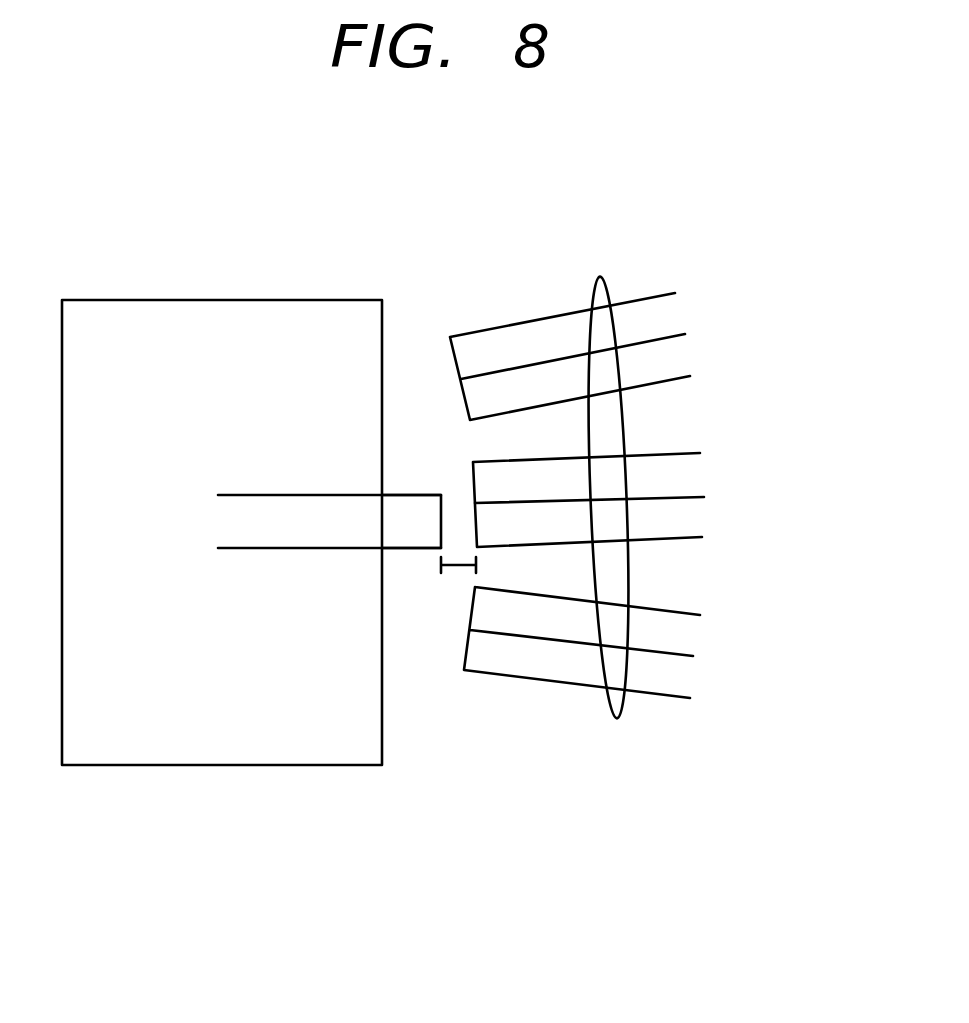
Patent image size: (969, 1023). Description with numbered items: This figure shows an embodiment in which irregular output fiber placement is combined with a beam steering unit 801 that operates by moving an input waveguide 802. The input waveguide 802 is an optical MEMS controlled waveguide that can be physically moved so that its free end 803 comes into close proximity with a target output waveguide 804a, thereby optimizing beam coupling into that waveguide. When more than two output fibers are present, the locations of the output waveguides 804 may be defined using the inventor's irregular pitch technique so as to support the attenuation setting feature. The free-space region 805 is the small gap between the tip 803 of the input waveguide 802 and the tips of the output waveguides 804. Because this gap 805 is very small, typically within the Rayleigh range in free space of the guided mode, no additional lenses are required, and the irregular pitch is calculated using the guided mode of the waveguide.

The beam steering unit 801 is at (220, 298).
The input waveguide 802 is at (258, 530).
The free end 803 is at (418, 492).
The output waveguides 804 is at (600, 277).
The target output waveguide 804a is at (685, 517).
The free-space region 805 is at (457, 567).